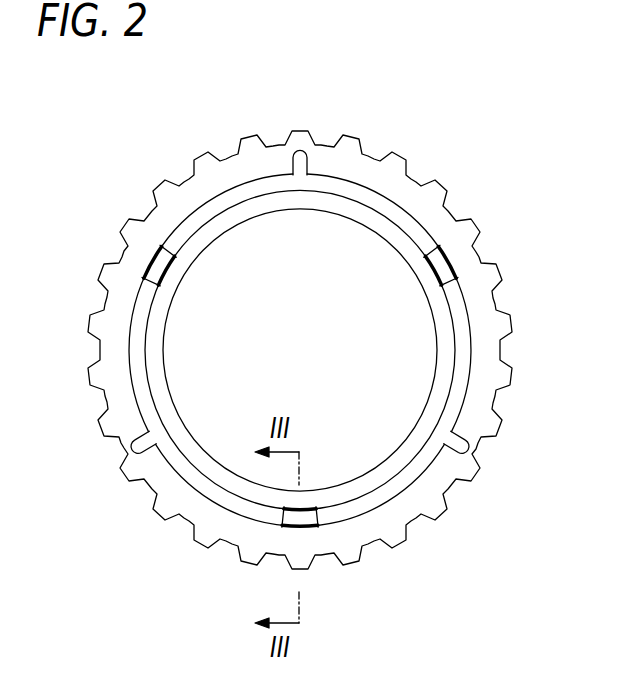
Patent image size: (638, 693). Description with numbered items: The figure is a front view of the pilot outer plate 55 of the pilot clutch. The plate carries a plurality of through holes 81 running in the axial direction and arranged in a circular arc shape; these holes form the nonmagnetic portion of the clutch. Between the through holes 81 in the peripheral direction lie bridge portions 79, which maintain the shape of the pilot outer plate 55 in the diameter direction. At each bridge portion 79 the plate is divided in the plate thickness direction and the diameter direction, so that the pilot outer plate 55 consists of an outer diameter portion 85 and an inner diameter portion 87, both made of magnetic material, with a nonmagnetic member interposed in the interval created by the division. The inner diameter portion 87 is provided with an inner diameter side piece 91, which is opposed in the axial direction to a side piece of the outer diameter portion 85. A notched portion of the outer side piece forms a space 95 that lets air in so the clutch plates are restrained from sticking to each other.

The pilot outer plate 55 is at (380, 148).
The outer diameter portion 85 is at (192, 190).
The through holes 81 is at (400, 215).
The inner diameter portion 87 is at (222, 230).
The space 95 is at (300, 157).
The bridge portions 79 is at (442, 250).
The inner diameter side piece 91 is at (447, 273).